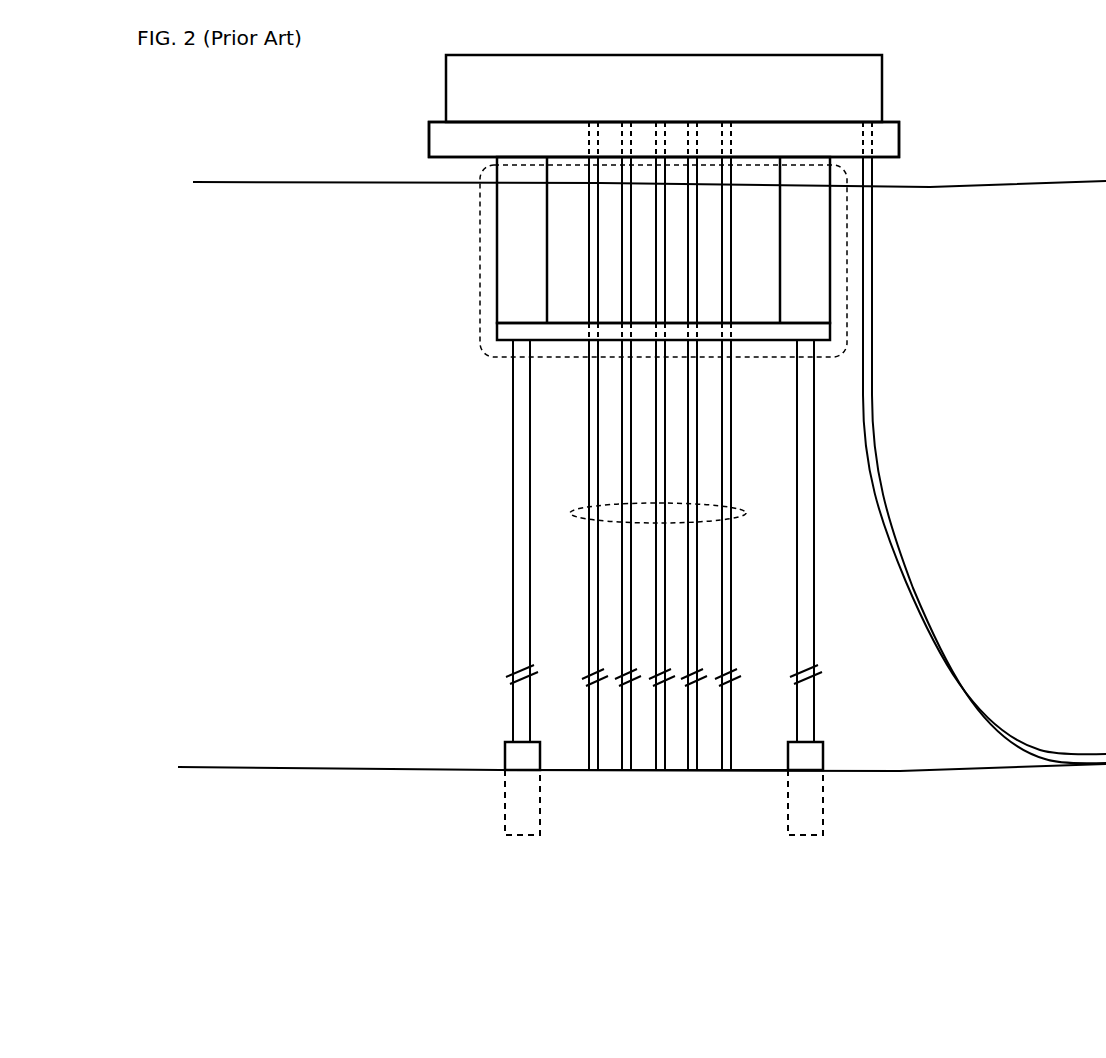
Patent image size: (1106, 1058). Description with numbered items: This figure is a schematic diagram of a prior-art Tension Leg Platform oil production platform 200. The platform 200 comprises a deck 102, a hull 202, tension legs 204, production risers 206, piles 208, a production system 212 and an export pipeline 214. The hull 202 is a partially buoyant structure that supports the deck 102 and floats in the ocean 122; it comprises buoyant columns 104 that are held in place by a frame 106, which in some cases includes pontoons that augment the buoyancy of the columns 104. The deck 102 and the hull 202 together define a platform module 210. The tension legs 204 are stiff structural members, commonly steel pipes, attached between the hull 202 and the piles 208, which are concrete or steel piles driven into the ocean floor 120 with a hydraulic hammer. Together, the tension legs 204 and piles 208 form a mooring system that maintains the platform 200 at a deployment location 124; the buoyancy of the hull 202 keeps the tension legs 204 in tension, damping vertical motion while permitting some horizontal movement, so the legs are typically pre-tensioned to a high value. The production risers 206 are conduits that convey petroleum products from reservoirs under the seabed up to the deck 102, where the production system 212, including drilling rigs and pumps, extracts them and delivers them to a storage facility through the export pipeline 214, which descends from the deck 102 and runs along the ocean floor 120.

The platform 200 is at (374, 86).
The platform module 210 is at (986, 121).
The production system 212 is at (678, 100).
The deck 102 is at (570, 150).
The hull 202 is at (480, 220).
The buoyant columns 104 is at (537, 283).
The frame 106 is at (494, 332).
The production risers 206 is at (748, 514).
The export pipeline 214 is at (889, 527).
The tension legs 204 is at (512, 660).
The piles 208 is at (505, 758).
The ocean 122 is at (318, 225).
The deployment location 124 is at (767, 835).
The ocean floor 120 is at (1105, 835).